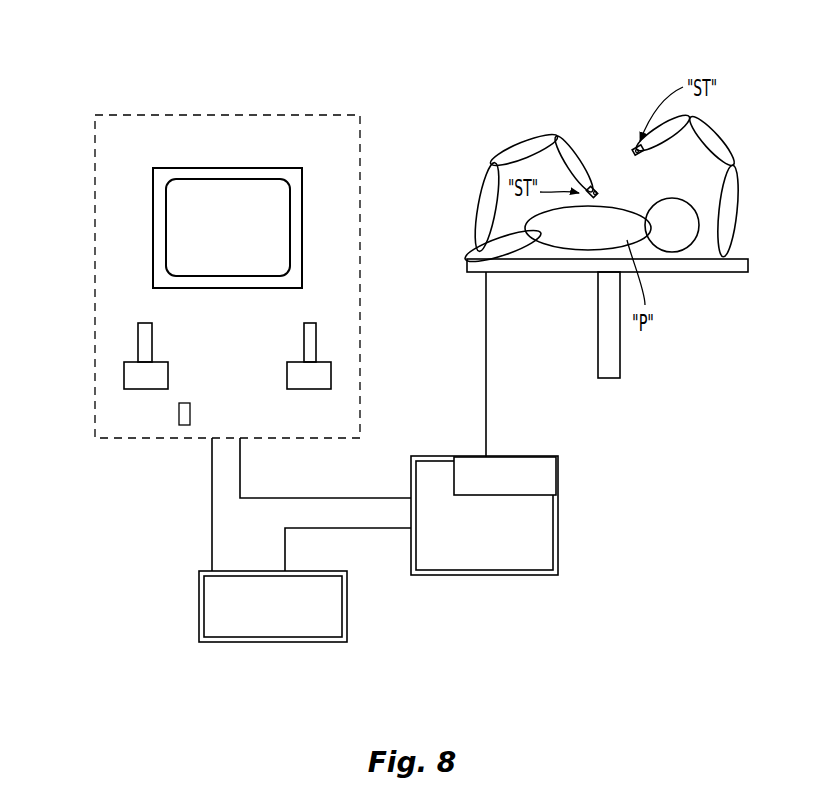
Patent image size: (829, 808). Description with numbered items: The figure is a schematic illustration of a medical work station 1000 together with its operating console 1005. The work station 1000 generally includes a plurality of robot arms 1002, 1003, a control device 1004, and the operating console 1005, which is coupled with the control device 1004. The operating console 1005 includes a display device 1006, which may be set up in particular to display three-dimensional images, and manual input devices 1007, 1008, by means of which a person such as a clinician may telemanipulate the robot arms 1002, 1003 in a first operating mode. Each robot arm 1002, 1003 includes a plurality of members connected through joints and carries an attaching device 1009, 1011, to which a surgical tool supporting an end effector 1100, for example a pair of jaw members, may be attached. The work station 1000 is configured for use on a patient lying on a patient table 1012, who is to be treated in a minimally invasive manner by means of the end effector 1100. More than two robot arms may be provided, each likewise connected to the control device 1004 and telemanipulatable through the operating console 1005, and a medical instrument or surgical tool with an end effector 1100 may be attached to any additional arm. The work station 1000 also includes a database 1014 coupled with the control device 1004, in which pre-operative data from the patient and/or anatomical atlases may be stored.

The medical work station 1000 is at (632, 460).
The robot arm 1002 is at (502, 140).
The robot arm 1003 is at (723, 127).
The control device 1004 is at (484, 515).
The operating console 1005 is at (188, 85).
The display device 1006 is at (210, 238).
The manual input device 1007 is at (124, 375).
The manual input device 1008 is at (331, 372).
The attaching device 1009 is at (590, 192).
The attaching device 1011 is at (637, 140).
The patient table 1012 is at (548, 272).
The database 1014 is at (273, 606).
The end effector 1100 is at (598, 194).